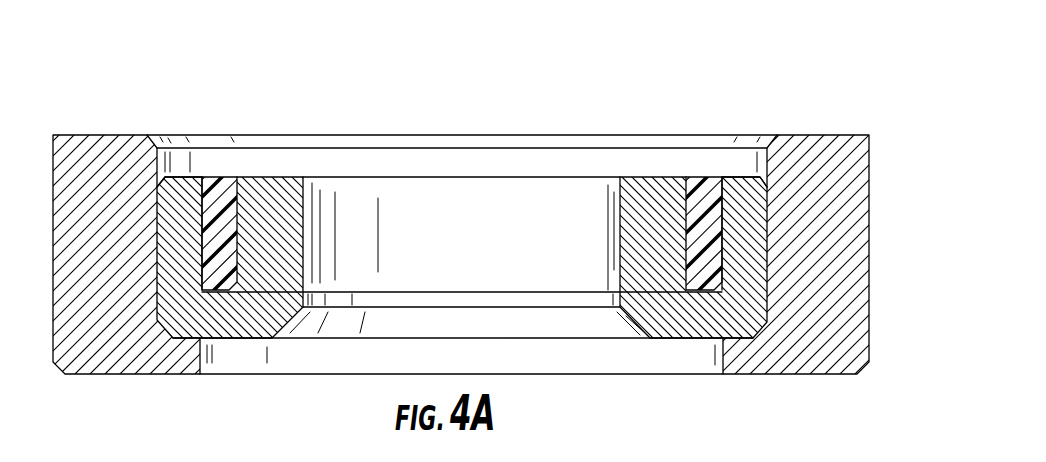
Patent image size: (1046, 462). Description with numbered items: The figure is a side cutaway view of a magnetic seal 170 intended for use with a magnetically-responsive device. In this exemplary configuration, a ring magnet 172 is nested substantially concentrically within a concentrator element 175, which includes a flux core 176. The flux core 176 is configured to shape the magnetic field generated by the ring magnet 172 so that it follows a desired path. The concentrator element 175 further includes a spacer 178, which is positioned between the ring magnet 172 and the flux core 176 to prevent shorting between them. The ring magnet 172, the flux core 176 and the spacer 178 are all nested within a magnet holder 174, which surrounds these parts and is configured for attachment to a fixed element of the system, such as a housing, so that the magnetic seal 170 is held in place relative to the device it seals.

The magnetic seal 170 is at (523, 217).
The ring magnet 172 is at (652, 185).
The magnet holder 174 is at (95, 167).
The concentrator element 175 is at (229, 343).
The flux core 176 is at (737, 183).
The spacer 178 is at (218, 185).